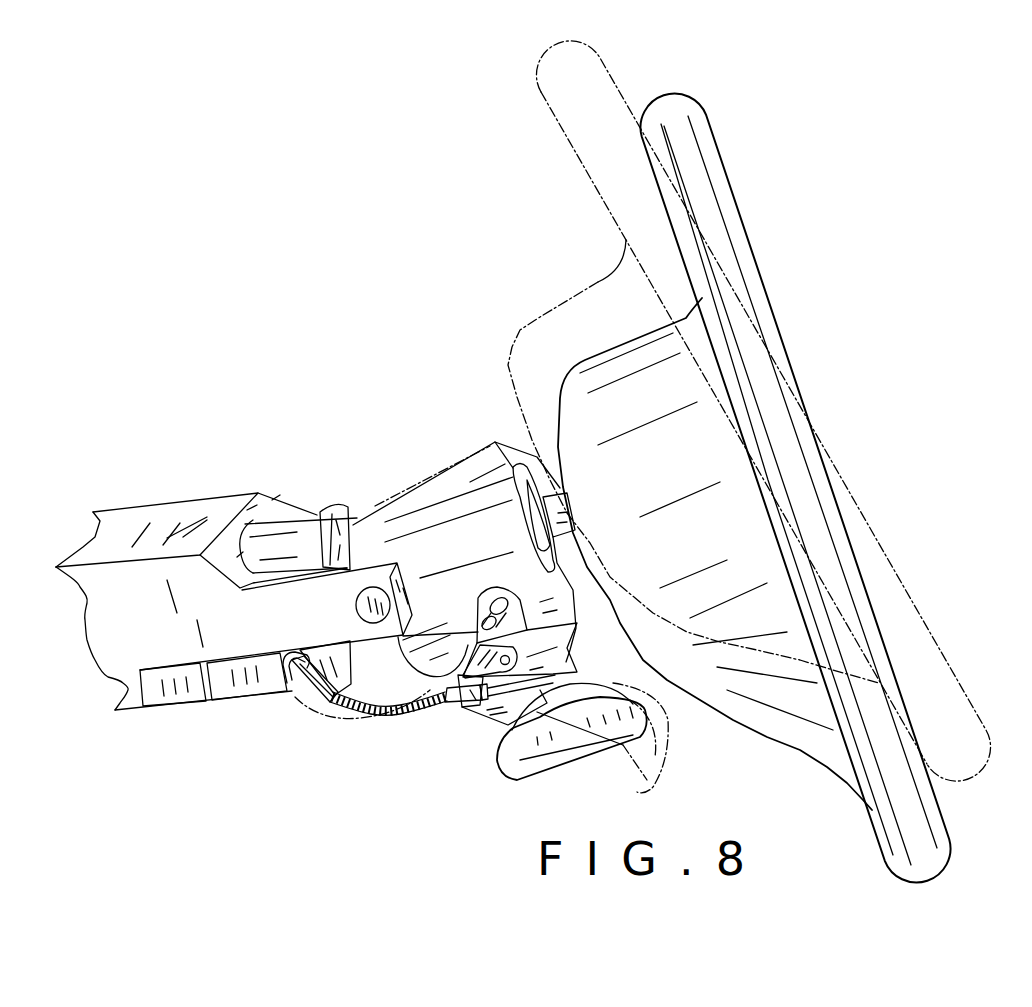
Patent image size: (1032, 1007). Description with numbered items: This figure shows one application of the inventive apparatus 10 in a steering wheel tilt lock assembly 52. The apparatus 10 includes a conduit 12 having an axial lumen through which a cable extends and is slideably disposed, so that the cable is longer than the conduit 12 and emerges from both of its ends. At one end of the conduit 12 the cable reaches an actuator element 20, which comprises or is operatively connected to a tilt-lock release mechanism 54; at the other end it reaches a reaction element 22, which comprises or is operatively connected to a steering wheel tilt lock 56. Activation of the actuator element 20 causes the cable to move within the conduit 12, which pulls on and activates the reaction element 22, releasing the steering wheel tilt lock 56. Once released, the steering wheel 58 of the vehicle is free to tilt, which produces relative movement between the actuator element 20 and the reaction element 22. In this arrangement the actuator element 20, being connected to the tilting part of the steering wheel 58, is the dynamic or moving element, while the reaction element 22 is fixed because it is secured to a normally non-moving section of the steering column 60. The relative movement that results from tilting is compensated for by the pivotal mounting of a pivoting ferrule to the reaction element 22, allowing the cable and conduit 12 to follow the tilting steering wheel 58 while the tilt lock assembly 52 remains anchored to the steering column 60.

The inventive apparatus 10 is at (323, 715).
The conduit 12 is at (370, 724).
The actuator element 20 is at (488, 730).
The reaction element 22 is at (270, 703).
The steering wheel tilt lock assembly 52 is at (401, 750).
The tilt-lock release mechanism 54 is at (492, 749).
The steering wheel tilt lock 56 is at (278, 698).
The steering wheel 58 is at (581, 349).
The steering column 60 is at (308, 510).